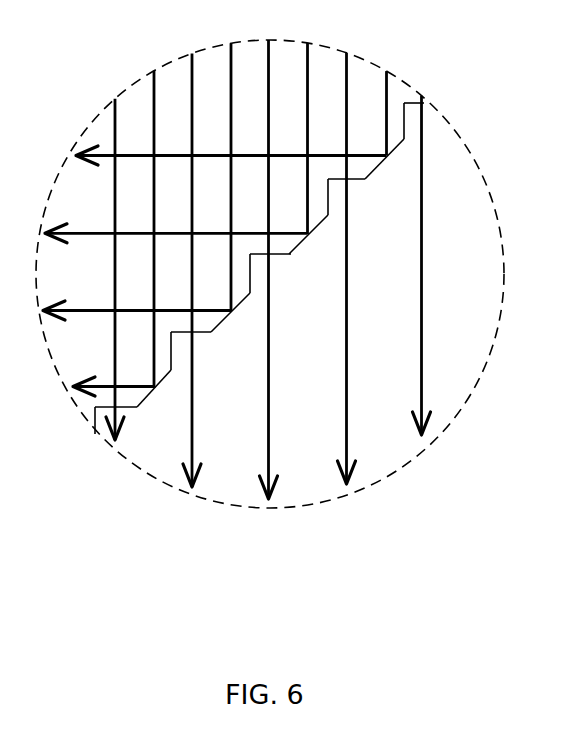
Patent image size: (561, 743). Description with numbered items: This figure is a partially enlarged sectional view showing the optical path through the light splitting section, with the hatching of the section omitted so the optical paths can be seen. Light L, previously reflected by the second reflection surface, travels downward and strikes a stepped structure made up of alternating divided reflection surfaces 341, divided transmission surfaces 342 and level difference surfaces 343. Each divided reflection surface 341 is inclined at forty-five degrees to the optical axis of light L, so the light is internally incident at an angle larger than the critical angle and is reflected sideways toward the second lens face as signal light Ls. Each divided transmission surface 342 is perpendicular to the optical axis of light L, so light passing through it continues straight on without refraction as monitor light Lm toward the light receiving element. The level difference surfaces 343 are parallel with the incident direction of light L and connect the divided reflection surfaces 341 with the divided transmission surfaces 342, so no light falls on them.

The light L is at (153, 108).
The monitor light Lm is at (270, 377).
The signal light Ls is at (94, 235).
The divided reflection surface 341 is at (224, 316).
The divided transmission surface 342 is at (272, 257).
The level difference surface 343 is at (406, 127).